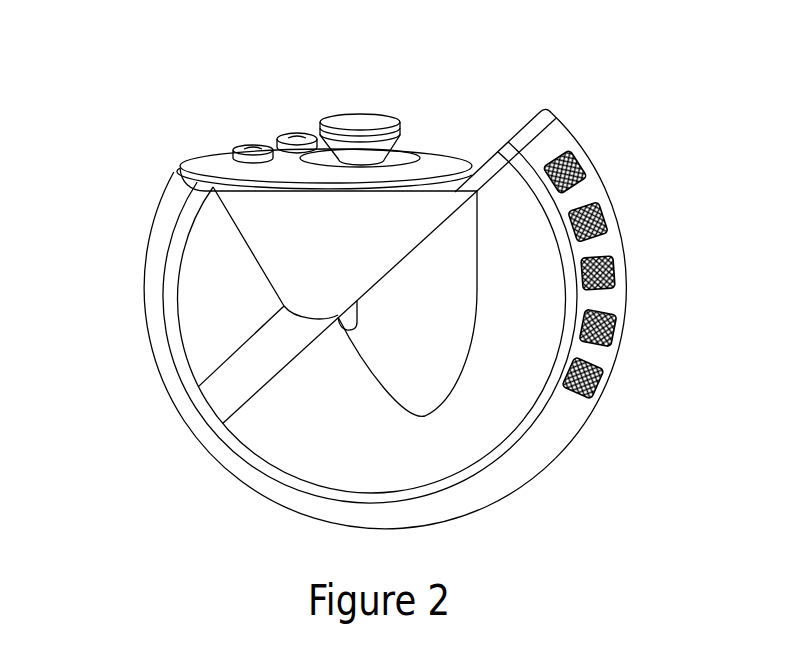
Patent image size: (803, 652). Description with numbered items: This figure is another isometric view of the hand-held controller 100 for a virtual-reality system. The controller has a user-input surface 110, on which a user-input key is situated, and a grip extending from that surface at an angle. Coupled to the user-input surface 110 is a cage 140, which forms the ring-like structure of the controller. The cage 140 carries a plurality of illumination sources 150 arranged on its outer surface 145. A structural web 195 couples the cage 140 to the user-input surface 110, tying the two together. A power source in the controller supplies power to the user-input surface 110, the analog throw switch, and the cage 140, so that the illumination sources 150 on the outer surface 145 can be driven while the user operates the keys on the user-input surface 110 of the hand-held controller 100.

The hand-held controller 100 is at (153, 68).
The user-input surface 110 is at (222, 160).
The cage 140 is at (167, 227).
The outer surface 145 is at (588, 190).
The illumination sources 150 is at (618, 272).
The structural web 195 is at (207, 320).